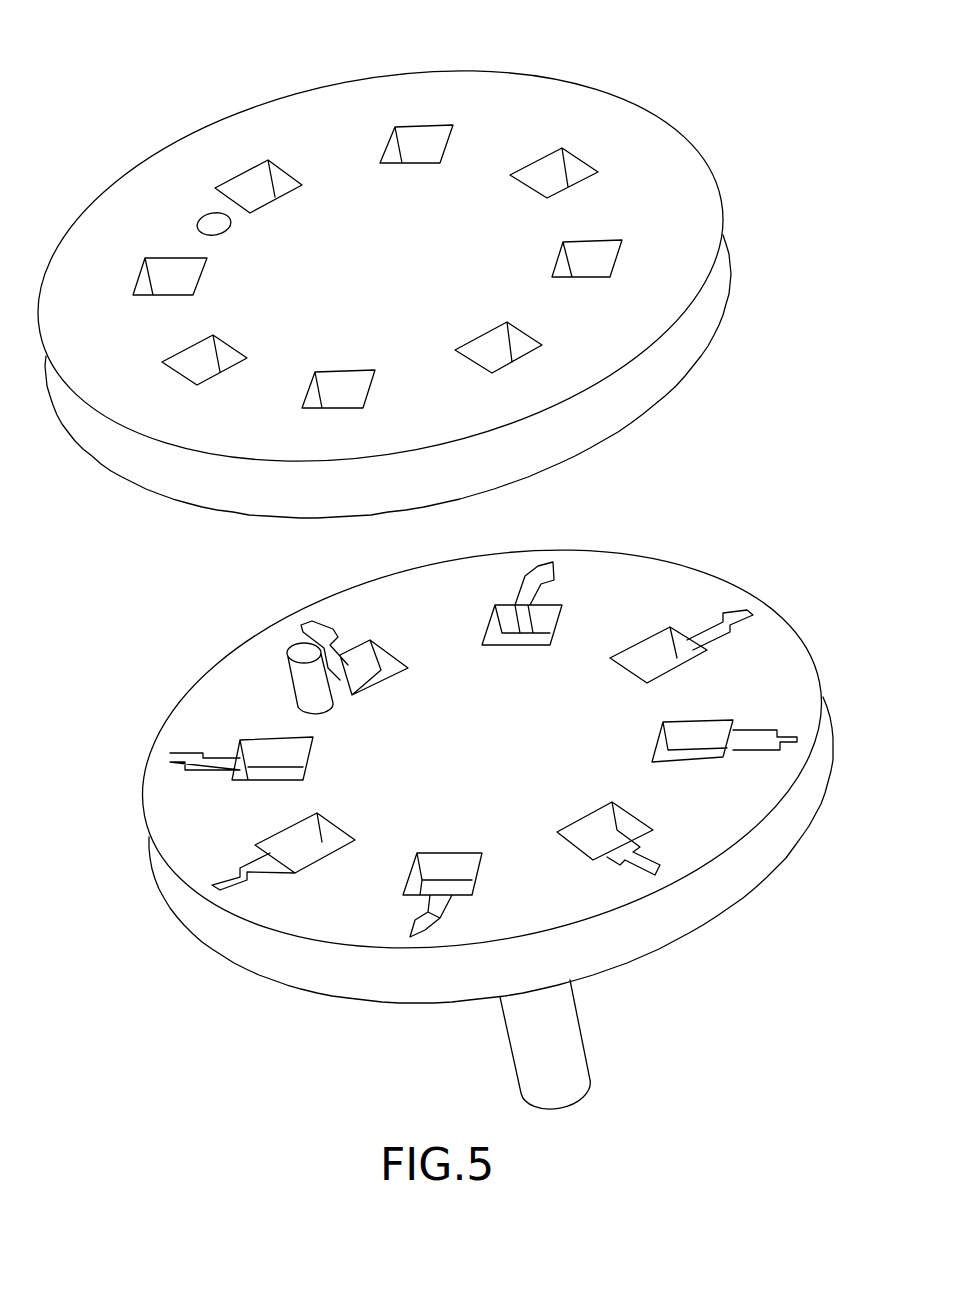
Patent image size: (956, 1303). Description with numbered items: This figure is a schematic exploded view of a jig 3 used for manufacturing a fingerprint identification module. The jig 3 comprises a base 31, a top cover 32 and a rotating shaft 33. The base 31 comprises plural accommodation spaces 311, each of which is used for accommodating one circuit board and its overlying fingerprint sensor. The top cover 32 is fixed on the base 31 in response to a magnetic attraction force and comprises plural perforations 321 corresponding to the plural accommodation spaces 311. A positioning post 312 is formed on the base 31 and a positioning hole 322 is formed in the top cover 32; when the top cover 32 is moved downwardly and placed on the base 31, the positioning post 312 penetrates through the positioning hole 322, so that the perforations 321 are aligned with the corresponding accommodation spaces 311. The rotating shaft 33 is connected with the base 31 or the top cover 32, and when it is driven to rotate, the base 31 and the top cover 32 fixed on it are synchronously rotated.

The jig 3 is at (242, 51).
The base 31 is at (263, 968).
The accommodation spaces 311 is at (387, 665).
The positioning post 312 is at (300, 650).
The top cover 32 is at (163, 485).
The perforations 321 is at (175, 270).
The positioning hole 322 is at (213, 222).
The rotating shaft 33 is at (570, 1040).